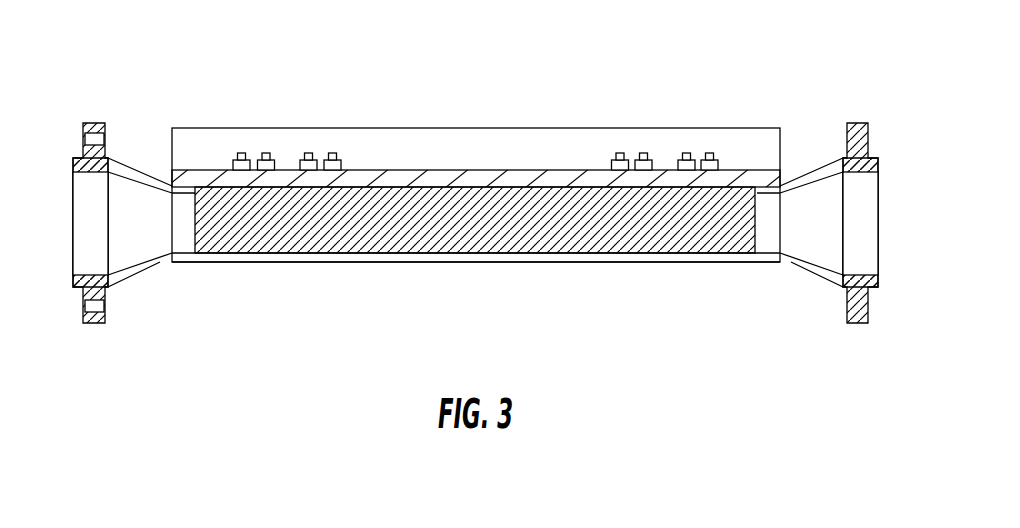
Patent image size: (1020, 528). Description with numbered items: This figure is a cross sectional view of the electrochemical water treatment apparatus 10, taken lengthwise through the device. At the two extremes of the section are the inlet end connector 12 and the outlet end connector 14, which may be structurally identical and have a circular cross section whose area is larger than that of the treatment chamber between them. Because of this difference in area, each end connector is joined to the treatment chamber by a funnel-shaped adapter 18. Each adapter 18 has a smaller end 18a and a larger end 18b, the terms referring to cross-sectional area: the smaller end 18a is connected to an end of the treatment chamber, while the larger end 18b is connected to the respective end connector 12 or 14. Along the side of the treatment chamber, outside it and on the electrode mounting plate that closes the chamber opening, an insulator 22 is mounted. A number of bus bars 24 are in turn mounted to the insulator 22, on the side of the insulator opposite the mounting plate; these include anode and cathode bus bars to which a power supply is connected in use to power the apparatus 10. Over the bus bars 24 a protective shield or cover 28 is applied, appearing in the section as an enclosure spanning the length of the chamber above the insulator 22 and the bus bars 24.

The water treatment apparatus 10 is at (546, 108).
The inlet end connector 12 is at (862, 305).
The outlet end connector 14 is at (104, 144).
The funnel-shaped adapter 18 is at (804, 216).
The smaller end 18a is at (153, 250).
The larger end 18b is at (113, 257).
The insulator 22 is at (582, 186).
The bus bars 24 is at (322, 160).
The protective shield or cover 28 is at (517, 149).